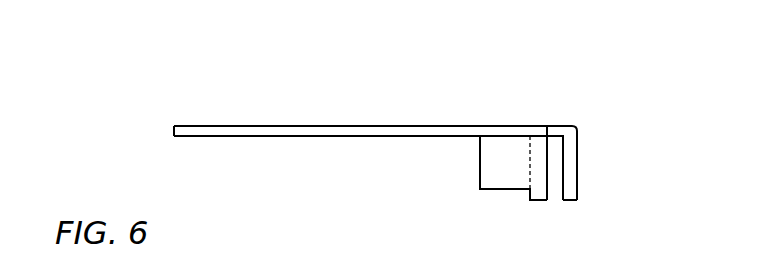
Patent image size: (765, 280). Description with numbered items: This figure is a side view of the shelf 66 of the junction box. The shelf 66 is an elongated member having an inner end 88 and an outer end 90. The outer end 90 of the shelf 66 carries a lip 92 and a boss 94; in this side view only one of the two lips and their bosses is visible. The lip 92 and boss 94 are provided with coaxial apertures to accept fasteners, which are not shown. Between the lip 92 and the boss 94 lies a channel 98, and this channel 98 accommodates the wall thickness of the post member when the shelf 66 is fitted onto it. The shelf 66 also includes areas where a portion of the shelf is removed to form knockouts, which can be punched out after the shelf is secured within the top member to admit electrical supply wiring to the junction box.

The shelf 66 is at (375, 96).
The inner end 88 is at (174, 131).
The outer end 90 is at (578, 138).
The lip 92 is at (570, 189).
The boss 94 is at (487, 173).
The channel 98 is at (555, 189).